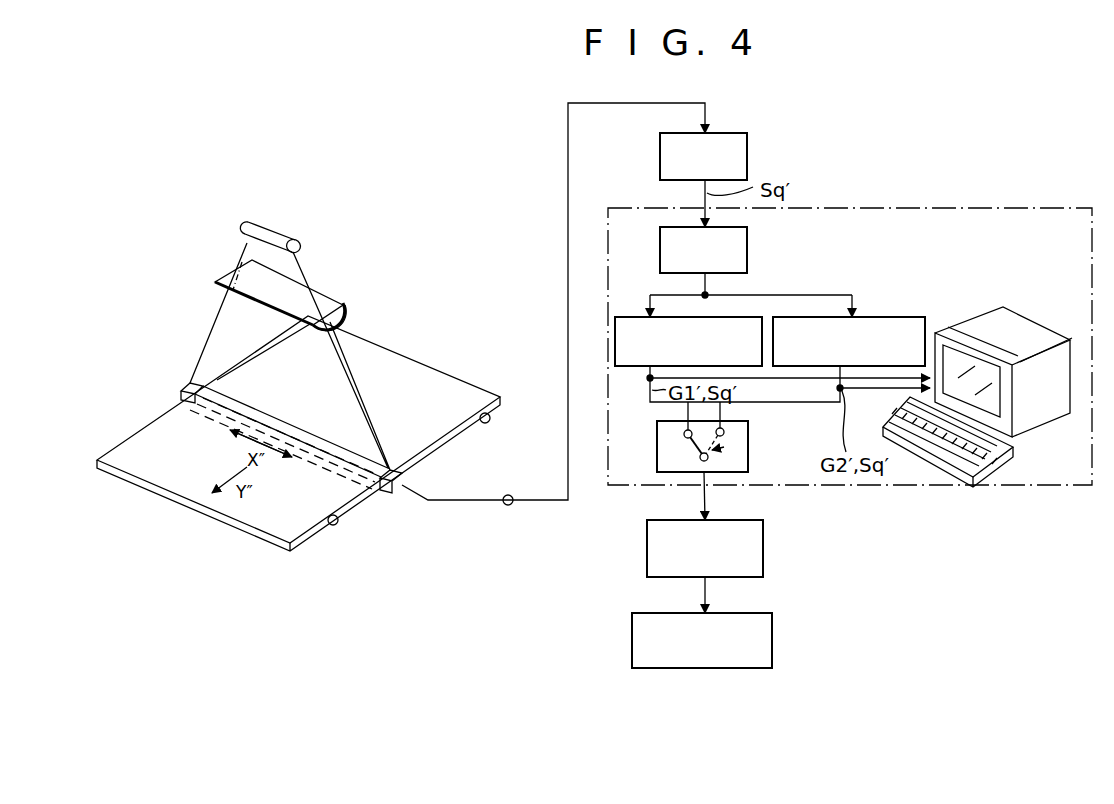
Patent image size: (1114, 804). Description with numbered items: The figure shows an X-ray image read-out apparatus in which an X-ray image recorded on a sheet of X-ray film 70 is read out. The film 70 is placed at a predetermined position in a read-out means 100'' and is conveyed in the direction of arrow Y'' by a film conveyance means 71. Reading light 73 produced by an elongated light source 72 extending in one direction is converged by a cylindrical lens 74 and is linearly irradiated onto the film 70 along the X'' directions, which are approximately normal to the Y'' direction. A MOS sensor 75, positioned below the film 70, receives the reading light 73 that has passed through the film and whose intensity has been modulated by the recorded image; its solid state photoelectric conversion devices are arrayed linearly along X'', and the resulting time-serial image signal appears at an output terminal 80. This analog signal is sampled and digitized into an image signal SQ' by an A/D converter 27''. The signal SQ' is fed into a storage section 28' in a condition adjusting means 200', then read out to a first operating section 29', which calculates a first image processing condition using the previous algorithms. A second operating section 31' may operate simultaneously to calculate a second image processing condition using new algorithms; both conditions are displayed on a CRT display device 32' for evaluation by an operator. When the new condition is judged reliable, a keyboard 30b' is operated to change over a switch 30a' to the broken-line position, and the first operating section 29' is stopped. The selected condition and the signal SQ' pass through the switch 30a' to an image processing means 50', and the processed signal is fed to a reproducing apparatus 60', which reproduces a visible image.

The read-out means 100'' is at (197, 221).
The elongated light source 72 is at (296, 236).
The reading light 73 is at (297, 268).
The cylindrical lens 74 is at (330, 304).
The X-ray film 70 is at (482, 388).
The film conveyance means 71 is at (490, 420).
The MOS sensor 75 is at (405, 481).
The output terminal 80 is at (508, 505).
The A/D converter 27'' is at (728, 156).
The condition adjusting means 200' is at (850, 326).
The storage section 28' is at (735, 250).
The first operating section 29' is at (688, 315).
The second operating section 31' is at (849, 315).
The CRT display device 32' is at (1003, 348).
The switch 30a' is at (737, 437).
The keyboard 30b' is at (982, 442).
The image processing means 50' is at (735, 548).
The reproducing apparatus 60' is at (723, 640).